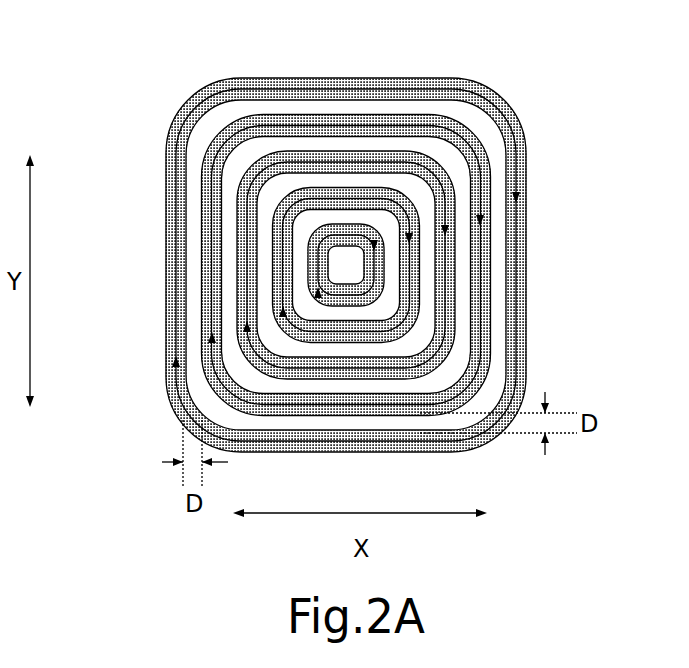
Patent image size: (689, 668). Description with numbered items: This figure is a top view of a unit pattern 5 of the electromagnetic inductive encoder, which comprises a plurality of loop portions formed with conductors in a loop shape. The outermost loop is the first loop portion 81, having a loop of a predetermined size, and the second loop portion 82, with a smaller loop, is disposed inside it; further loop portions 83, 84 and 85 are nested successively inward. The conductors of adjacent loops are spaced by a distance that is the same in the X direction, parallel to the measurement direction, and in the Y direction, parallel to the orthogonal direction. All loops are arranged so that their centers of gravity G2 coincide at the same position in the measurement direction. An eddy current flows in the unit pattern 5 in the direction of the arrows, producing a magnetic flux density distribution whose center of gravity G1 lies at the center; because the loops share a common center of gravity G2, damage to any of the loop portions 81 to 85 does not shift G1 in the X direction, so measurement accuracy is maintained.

The unit pattern 5 is at (512, 73).
The first loop portion 81 is at (173, 118).
The second loop portion 82 is at (267, 120).
The loop portion 83 is at (447, 255).
The loop portion 84 is at (418, 306).
The loop portion 85 is at (383, 270).
The center of gravity of the magnetic flux density distribution G1 is at (340, 265).
The center of gravity of the loop portions G2 is at (392, 273).